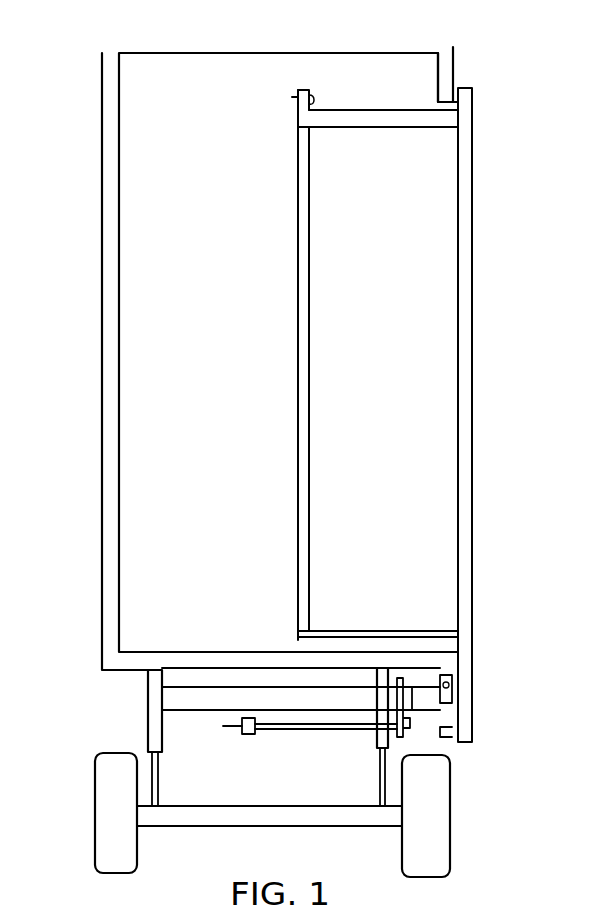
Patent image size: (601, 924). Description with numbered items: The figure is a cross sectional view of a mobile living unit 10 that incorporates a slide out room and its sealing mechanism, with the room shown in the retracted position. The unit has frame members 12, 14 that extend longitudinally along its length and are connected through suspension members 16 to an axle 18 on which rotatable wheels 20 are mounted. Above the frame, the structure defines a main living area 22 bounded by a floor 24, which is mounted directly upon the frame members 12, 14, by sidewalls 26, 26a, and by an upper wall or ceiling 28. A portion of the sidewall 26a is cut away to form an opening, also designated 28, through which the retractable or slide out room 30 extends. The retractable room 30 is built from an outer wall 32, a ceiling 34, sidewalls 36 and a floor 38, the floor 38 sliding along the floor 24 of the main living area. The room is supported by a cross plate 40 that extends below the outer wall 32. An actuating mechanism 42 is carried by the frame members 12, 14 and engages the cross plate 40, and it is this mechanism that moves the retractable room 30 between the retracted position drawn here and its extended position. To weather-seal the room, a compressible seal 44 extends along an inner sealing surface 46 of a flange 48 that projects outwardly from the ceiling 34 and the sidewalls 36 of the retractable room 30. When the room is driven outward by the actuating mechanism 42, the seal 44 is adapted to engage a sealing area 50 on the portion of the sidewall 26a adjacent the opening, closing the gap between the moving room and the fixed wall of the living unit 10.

The mobile living unit 10 is at (484, 113).
The frame member 12 is at (155, 720).
The frame member 14 is at (380, 680).
The suspension members 16 is at (158, 775).
The axle 18 is at (263, 815).
The rotatable wheels 20 is at (120, 850).
The main living area 22 is at (233, 527).
The floor 24 is at (230, 665).
The sidewall 26 is at (115, 432).
The sidewall 26a is at (440, 66).
The upper wall or ceiling 28 is at (153, 53).
The retractable or slide out room 30 is at (447, 255).
The outer wall 32 is at (476, 183).
The ceiling 34 is at (387, 120).
The sidewalls 36 is at (330, 277).
The floor 38 is at (358, 642).
The cross plate 40 is at (462, 692).
The actuating mechanism 42 is at (300, 725).
The compressible seal 44 is at (312, 100).
The inner sealing surface 46 is at (310, 96).
The flange 48 is at (298, 98).
The sealing area 50 is at (455, 80).